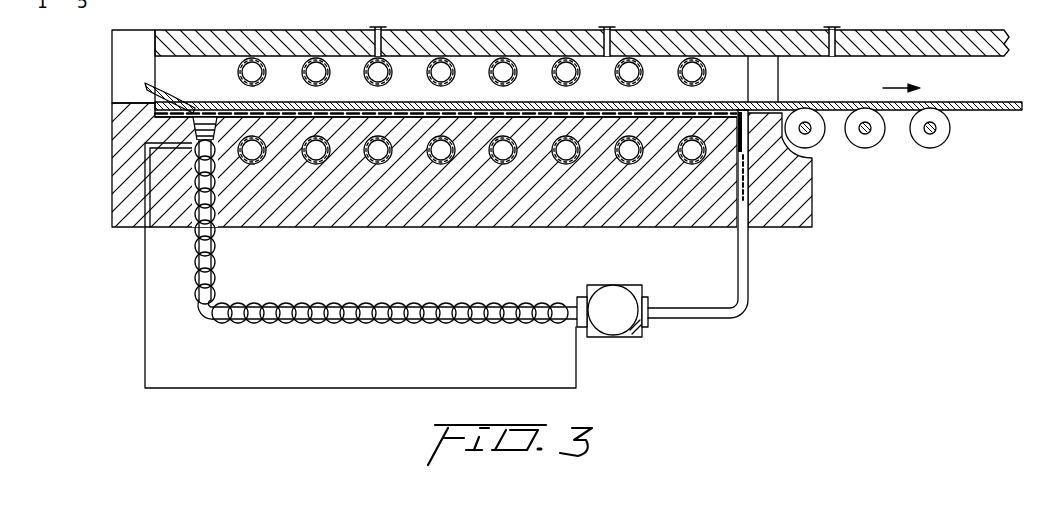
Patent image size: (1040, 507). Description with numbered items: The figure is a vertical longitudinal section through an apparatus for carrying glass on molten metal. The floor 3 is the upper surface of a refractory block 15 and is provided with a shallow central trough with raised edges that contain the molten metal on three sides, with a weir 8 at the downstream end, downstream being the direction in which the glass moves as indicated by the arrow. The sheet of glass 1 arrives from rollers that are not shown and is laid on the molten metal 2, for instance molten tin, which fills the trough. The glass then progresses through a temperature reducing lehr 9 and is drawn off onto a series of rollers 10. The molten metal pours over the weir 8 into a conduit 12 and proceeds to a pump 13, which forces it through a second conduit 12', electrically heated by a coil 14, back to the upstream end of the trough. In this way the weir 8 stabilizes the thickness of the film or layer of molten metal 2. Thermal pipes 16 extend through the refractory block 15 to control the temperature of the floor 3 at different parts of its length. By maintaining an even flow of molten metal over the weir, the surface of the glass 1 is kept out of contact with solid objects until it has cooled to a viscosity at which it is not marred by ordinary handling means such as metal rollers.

The sheet of glass 1 is at (350, 103).
The molten metal 2 is at (202, 116).
The floor 3 is at (465, 117).
The weir 8 is at (736, 110).
The temperature reducing lehr 9 is at (516, 34).
The rollers 10 is at (923, 143).
The conduit 12 is at (721, 214).
The conduit 12' is at (160, 225).
The pump 13 is at (625, 322).
The coil 14 is at (314, 324).
The refractory block 15 is at (383, 213).
The thermal pipes 16 is at (452, 163).